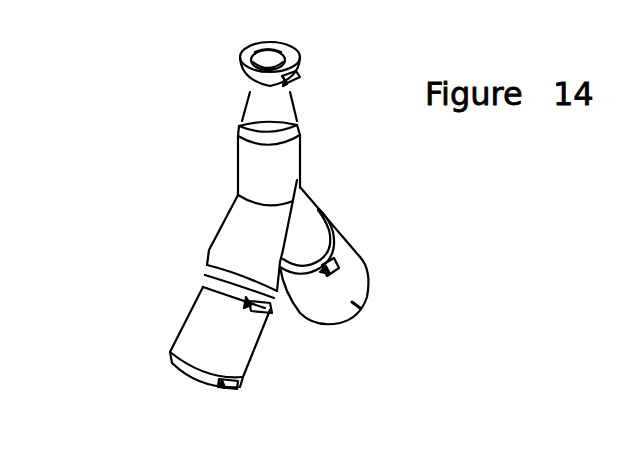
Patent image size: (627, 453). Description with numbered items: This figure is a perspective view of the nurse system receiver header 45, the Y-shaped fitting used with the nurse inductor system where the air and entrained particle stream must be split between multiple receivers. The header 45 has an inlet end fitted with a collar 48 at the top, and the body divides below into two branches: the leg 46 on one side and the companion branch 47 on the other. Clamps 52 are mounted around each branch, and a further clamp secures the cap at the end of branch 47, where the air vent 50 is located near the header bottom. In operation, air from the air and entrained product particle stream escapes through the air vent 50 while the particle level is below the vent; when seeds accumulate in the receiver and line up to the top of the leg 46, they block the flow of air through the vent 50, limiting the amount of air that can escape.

The receiver header 45 is at (129, 141).
The inlet collar 48 is at (284, 56).
The leg 46 is at (318, 210).
The left outlet branch 47 is at (210, 252).
The hose clamp 52 is at (362, 267).
The air vent 50 is at (198, 389).